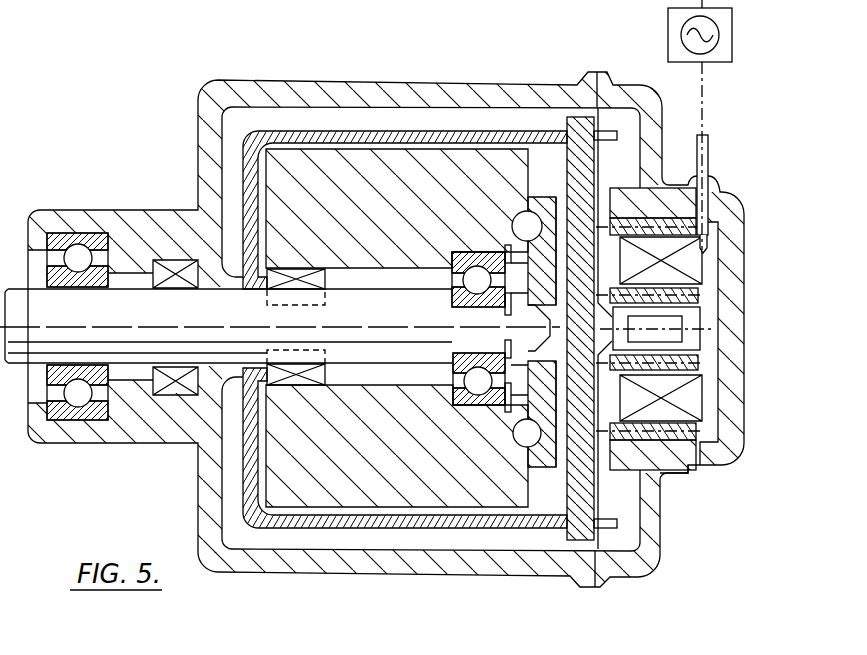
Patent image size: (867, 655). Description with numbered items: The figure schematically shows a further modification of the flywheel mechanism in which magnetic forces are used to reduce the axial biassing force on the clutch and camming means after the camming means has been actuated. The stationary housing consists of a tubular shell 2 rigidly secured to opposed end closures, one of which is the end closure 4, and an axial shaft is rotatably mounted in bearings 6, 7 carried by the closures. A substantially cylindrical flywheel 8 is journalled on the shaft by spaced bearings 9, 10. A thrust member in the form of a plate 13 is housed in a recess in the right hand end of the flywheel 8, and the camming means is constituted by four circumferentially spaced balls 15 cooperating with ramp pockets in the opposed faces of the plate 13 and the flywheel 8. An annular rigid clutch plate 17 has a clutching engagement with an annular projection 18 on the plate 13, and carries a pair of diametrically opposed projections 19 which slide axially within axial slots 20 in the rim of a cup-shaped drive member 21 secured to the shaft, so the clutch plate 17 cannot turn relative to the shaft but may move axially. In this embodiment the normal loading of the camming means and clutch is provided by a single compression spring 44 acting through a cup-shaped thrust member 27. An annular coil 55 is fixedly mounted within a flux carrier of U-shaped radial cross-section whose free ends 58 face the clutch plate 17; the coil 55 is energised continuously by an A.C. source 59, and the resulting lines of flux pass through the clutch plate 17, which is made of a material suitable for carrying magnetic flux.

The tubular shell 2 is at (373, 562).
The end closure 4 is at (724, 210).
The bearing 6 is at (90, 406).
The bearing 7 is at (176, 395).
The flywheel 8 is at (366, 211).
The bearing 9 is at (453, 406).
The bearing 10 is at (312, 385).
The plate 13 is at (556, 468).
The balls 15 is at (518, 217).
The clutch plate 17 is at (599, 457).
The annular projection 18 is at (556, 217).
The projections 19 is at (578, 84).
The axial slots 20 is at (617, 135).
The cup-shaped drive member 21 is at (333, 522).
The cup-shaped thrust member 27 is at (633, 307).
The compression spring 44 is at (678, 405).
The annular coil 55 is at (663, 487).
The free ends 58 is at (705, 432).
The A.C. source 59 is at (667, 40).